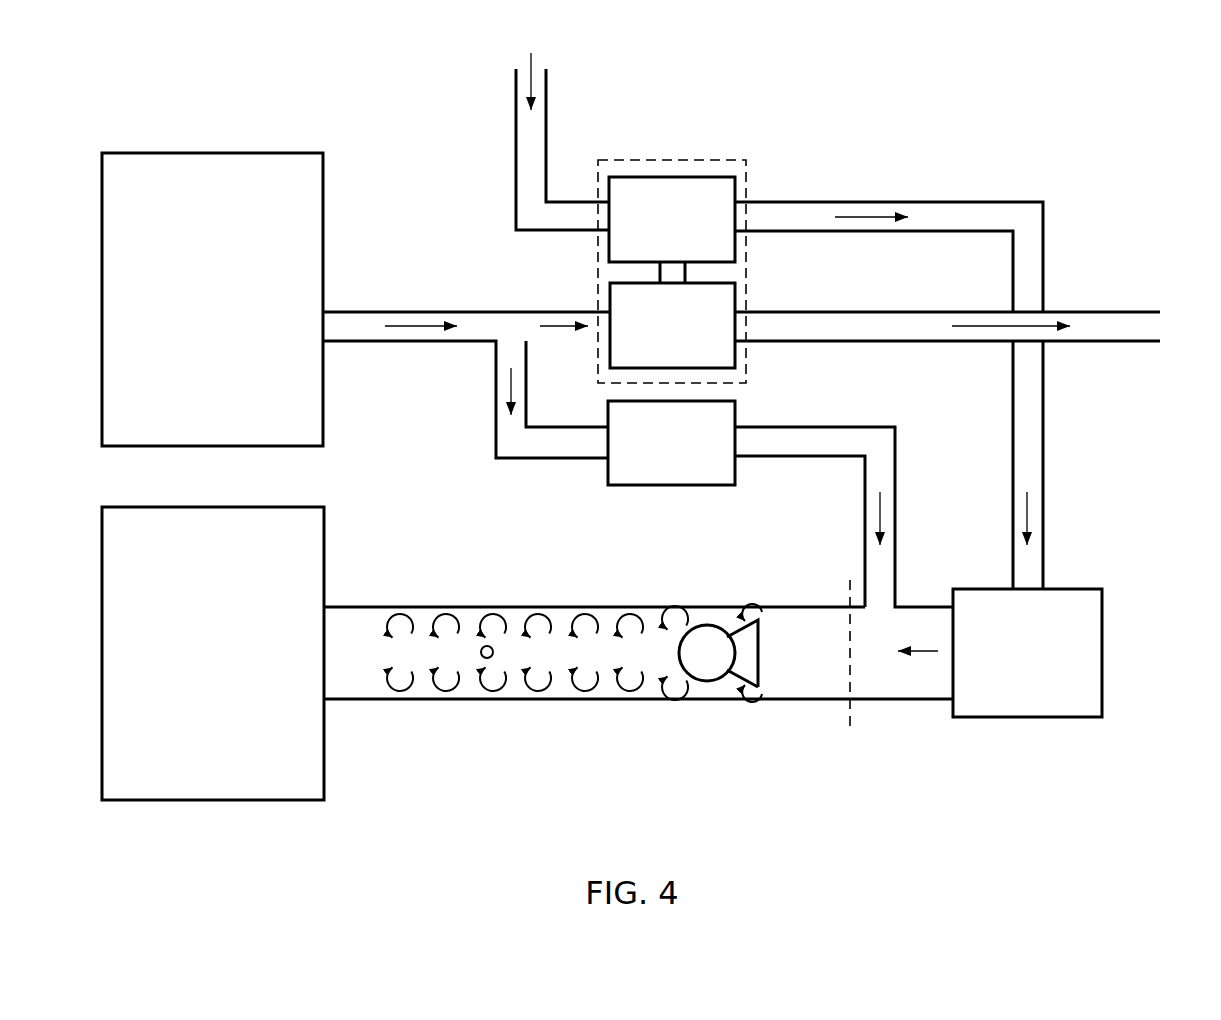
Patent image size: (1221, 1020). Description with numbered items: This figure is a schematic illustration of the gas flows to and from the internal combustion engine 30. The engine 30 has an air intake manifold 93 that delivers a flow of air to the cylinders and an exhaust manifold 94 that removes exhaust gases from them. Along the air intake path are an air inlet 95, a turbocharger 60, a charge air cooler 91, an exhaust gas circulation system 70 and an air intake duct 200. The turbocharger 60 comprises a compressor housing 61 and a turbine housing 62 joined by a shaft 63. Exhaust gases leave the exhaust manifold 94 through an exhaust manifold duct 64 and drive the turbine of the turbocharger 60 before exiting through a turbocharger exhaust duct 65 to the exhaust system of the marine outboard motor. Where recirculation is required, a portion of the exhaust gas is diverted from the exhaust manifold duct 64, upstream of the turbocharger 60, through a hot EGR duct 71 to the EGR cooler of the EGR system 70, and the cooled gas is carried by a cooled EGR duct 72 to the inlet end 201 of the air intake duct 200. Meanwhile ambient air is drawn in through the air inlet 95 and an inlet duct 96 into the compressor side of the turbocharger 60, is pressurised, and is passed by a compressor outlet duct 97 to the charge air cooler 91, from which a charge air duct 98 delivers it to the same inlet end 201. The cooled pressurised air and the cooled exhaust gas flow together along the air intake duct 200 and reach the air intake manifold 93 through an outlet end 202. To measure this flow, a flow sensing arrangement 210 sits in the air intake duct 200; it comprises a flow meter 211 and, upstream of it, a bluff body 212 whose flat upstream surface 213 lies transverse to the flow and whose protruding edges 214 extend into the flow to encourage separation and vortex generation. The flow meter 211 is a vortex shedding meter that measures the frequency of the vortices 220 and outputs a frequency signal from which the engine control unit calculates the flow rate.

The internal combustion engine 30 is at (1137, 85).
The turbocharger 60 is at (725, 160).
The compressor housing 61 is at (654, 234).
The turbine housing 62 is at (654, 340).
The shaft 63 is at (660, 272).
The exhaust manifold duct 64 is at (408, 311).
The turbocharger exhaust duct 65 is at (1097, 312).
The exhaust gas circulation system 70 is at (654, 457).
The hot EGR duct 71 is at (496, 442).
The cooled EGR duct 72 is at (898, 482).
The charge air cooler 91 is at (1009, 667).
The air intake manifold 93 is at (190, 648).
The exhaust manifold 94 is at (190, 307).
The air inlet 95 is at (548, 72).
The inlet duct 96 is at (548, 140).
The compressor outlet duct 97 is at (983, 202).
The charge air duct 98 is at (910, 700).
The air intake duct 200 is at (608, 701).
The inlet end 201 is at (849, 732).
The outlet end 202 is at (325, 735).
The flow sensing arrangement 210 is at (760, 783).
The flow meter 211 is at (489, 645).
The bluff body 212 is at (712, 626).
The flat upstream surface 213 is at (760, 633).
The protruding edges 214 is at (752, 692).
The vortices 220 is at (580, 614).